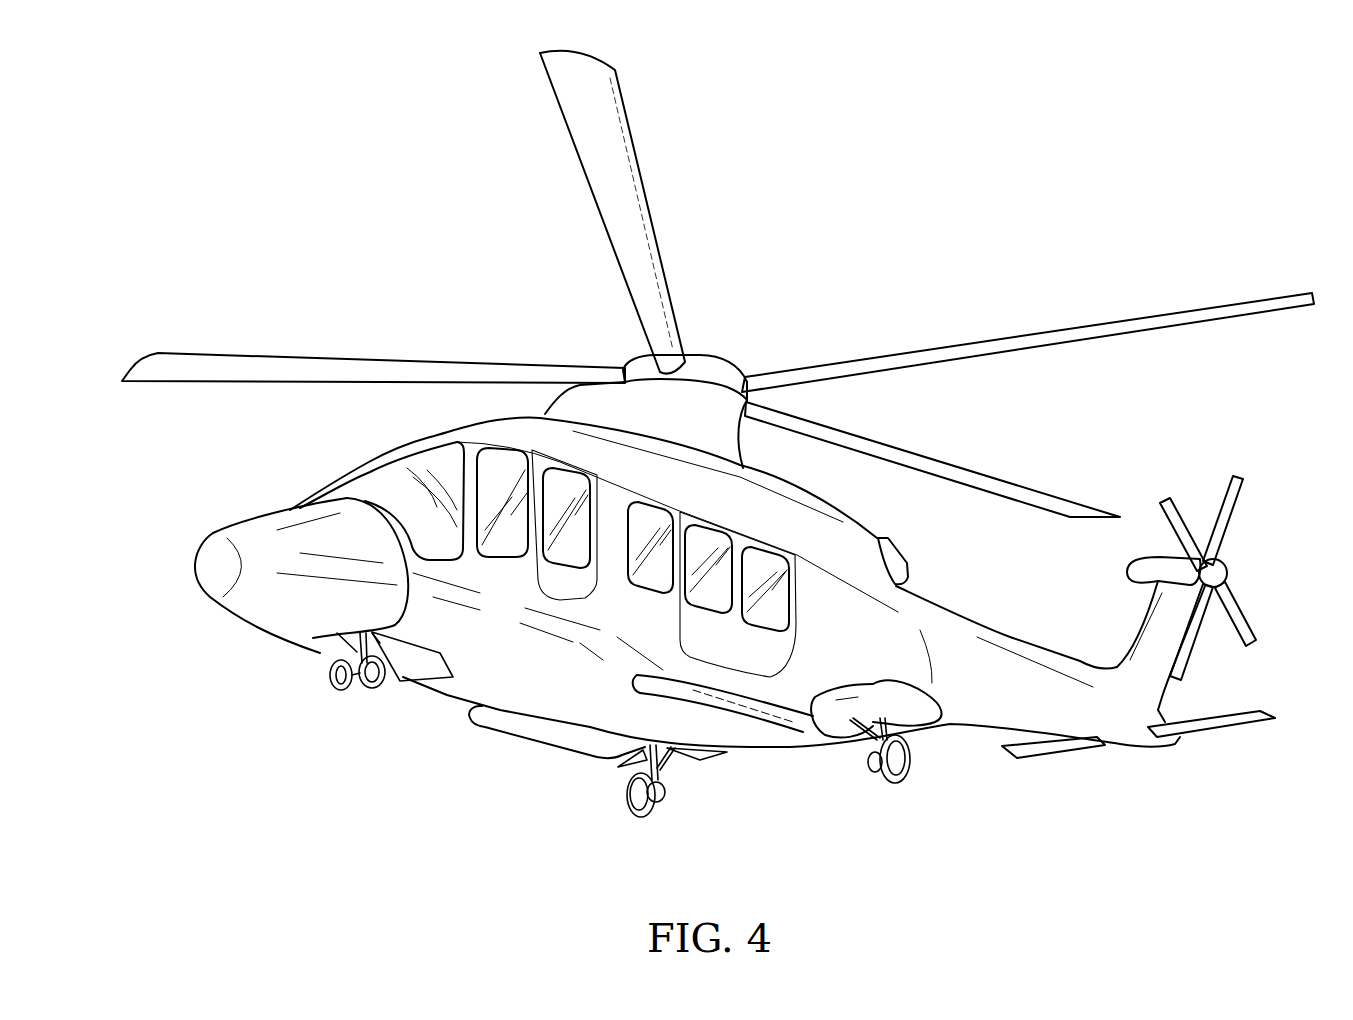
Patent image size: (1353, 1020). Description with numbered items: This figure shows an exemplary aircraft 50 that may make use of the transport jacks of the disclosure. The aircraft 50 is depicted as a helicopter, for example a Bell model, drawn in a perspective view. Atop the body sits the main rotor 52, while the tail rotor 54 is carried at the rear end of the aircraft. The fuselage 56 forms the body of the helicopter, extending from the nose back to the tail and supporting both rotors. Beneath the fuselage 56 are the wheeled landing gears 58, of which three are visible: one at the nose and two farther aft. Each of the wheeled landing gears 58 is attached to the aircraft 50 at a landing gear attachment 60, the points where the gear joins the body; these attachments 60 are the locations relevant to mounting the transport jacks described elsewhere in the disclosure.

The aircraft 50 is at (388, 160).
The main rotor 52 is at (740, 315).
The tail rotor 54 is at (1238, 522).
The fuselage 56 is at (463, 686).
The wheeled landing gears 58 is at (338, 723).
The landing gear attachments 60 is at (343, 642).